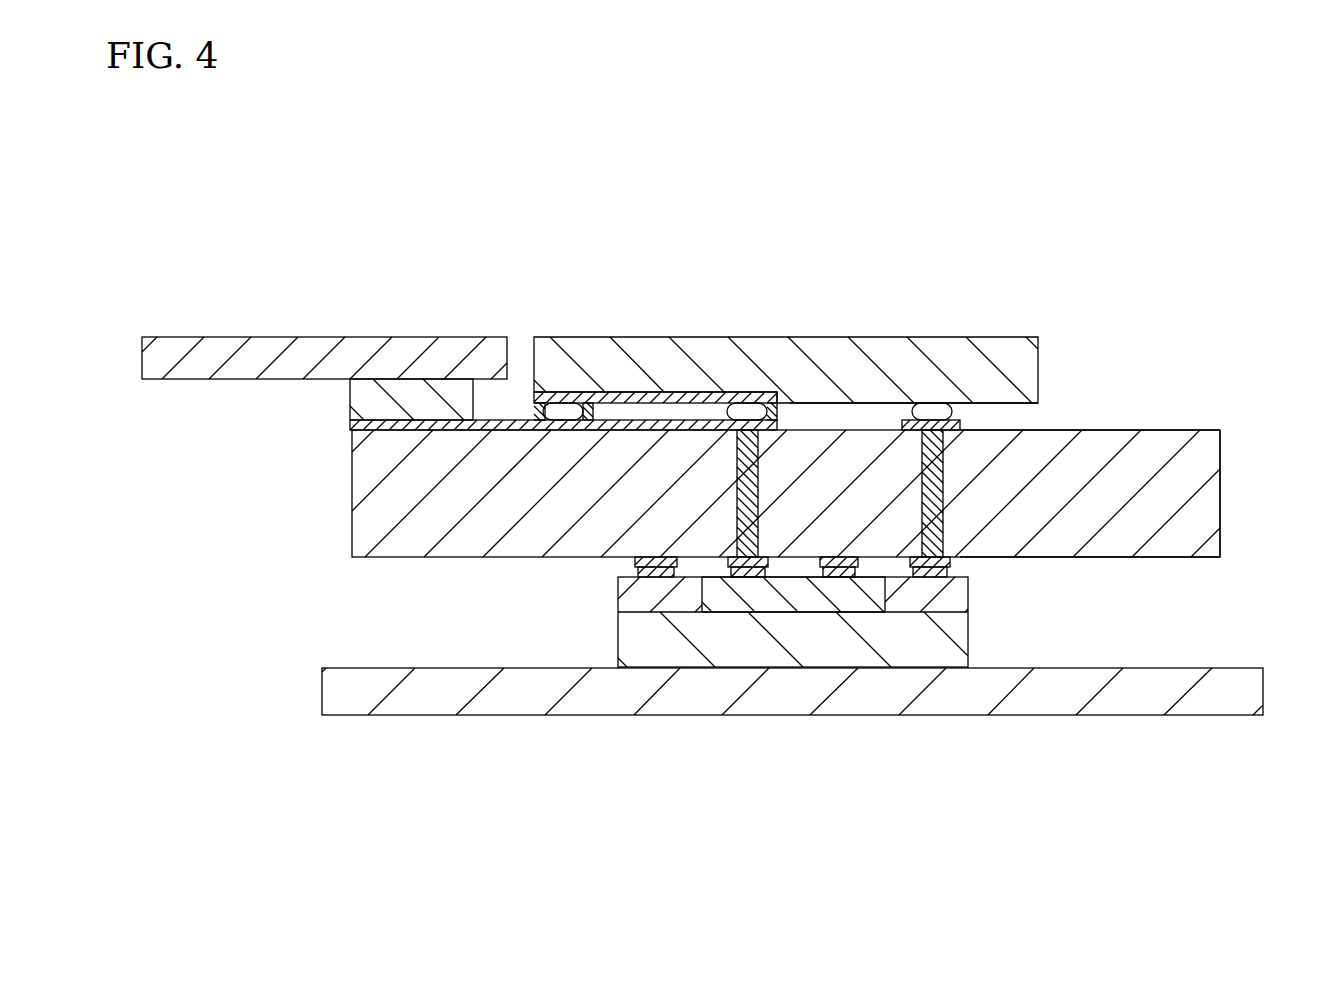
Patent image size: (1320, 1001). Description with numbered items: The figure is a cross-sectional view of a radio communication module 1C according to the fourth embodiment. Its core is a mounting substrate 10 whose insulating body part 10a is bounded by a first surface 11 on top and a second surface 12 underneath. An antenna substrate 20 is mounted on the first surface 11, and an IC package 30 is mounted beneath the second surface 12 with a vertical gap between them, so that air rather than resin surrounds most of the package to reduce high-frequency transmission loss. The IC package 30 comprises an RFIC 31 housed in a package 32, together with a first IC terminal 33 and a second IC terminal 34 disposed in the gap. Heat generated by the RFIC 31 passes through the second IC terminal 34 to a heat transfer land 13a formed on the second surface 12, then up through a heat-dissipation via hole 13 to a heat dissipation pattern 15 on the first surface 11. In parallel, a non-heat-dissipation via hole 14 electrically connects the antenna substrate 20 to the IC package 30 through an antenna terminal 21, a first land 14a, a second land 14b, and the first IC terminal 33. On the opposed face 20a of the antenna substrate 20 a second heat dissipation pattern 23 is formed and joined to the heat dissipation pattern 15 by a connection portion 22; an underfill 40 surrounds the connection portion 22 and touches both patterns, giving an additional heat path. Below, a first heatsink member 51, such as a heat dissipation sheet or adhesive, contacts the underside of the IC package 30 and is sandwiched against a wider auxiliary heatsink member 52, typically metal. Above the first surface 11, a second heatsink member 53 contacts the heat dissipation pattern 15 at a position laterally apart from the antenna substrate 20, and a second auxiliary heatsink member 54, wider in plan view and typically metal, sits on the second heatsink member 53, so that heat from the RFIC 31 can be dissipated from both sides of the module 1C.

The radio communication module 1C is at (210, 205).
The mounting substrate 10 is at (340, 492).
The body part 10a is at (1210, 503).
The first surface 11 is at (1122, 431).
The second surface 12 is at (1117, 557).
The heat-dissipation via hole 13 is at (752, 458).
The heat transfer land 13a is at (730, 562).
The non-heat-dissipation via hole 14 is at (925, 470).
The first land 14a is at (950, 428).
The second land 14b is at (955, 562).
The heat dissipation pattern 15 is at (350, 425).
The antenna substrate 20 is at (530, 327).
The opposed face 20a is at (1022, 405).
The antenna terminal 21 is at (925, 410).
The connection portion 22 is at (565, 410).
The second heat dissipation pattern 23 is at (683, 397).
The IC package 30 is at (607, 595).
The RFIC 31 is at (795, 603).
The package 32 is at (952, 605).
The first IC terminal 33 is at (945, 575).
The second IC terminal 34 is at (740, 580).
The underfill 40 is at (590, 412).
The first heatsink member 51 is at (960, 637).
The auxiliary heatsink member 52 is at (1258, 690).
The second heatsink member 53 is at (352, 398).
The second auxiliary heatsink member 54 is at (357, 345).